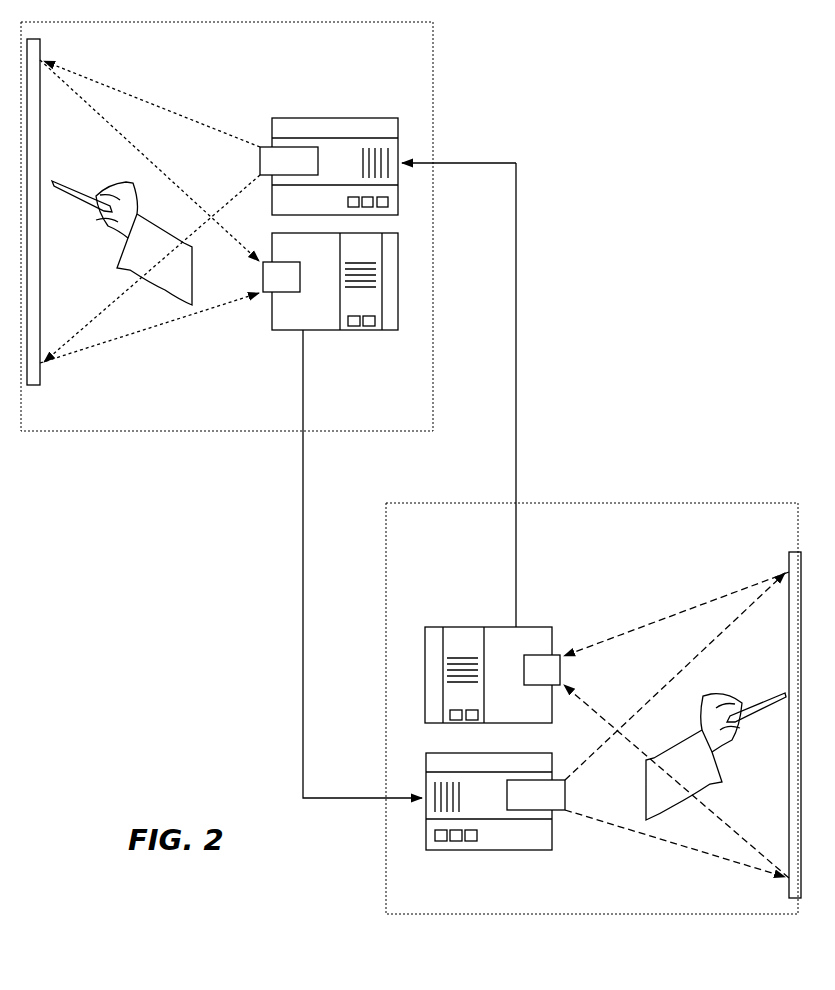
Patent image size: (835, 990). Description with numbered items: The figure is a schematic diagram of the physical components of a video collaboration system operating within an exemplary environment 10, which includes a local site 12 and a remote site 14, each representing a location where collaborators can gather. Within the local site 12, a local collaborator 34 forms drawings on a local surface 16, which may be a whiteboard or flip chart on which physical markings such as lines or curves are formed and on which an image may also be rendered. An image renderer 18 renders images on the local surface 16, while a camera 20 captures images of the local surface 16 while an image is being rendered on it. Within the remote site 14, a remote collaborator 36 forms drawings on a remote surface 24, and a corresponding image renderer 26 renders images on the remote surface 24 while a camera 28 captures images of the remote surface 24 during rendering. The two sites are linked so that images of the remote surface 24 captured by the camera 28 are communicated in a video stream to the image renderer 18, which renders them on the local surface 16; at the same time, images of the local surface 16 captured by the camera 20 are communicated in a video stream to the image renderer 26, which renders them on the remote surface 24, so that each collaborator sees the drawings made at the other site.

The environment 10 is at (656, 177).
The local site 12 is at (433, 73).
The remote site 14 is at (598, 502).
The local surface 16 is at (40, 163).
The image renderer 18 is at (303, 127).
The camera 20 is at (315, 320).
The remote surface 24 is at (788, 667).
The image renderer 26 is at (510, 838).
The camera 28 is at (503, 625).
The local collaborator 34 is at (117, 222).
The remote collaborator 36 is at (716, 738).